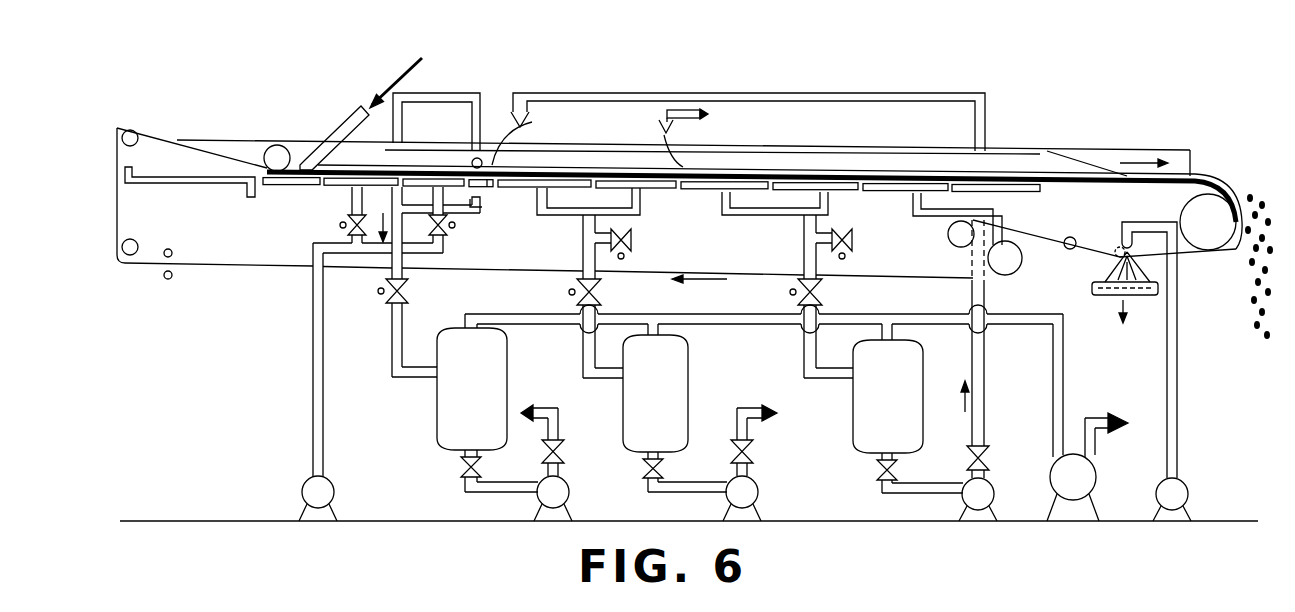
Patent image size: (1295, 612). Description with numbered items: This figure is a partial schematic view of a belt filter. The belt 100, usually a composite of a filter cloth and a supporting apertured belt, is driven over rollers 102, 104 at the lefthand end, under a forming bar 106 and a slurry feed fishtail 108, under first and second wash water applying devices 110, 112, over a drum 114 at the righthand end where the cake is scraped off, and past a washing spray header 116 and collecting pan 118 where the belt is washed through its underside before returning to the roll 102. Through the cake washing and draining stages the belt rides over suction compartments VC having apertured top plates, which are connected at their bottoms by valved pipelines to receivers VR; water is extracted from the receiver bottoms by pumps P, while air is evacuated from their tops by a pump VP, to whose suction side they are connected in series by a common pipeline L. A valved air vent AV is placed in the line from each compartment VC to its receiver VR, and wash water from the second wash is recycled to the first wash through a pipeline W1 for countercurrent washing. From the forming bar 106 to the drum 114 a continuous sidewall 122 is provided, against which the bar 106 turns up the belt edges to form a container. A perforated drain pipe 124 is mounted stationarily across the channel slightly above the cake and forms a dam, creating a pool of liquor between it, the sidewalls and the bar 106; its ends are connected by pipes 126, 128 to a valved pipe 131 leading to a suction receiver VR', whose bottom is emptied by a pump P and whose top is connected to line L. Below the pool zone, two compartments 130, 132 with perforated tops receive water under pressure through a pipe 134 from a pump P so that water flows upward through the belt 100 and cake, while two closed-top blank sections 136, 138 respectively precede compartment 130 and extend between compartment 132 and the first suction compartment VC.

The belt 100 is at (163, 133).
The roller 102 is at (135, 242).
The roller 104 is at (133, 130).
The forming bar 106 is at (276, 150).
The slurry feed fishtail 108 is at (346, 112).
The first wash water applying device 110 is at (533, 126).
The second wash water applying device 112 is at (682, 126).
The drum 114 is at (1228, 233).
The washing spray header 116 is at (1118, 236).
The collecting pan 118 is at (1092, 287).
The sidewall 122 is at (295, 143).
The perforated drain pipe 124 is at (472, 162).
The pipe 126 is at (452, 200).
The pipe 128 is at (423, 93).
The compartment 130 is at (335, 187).
The valved pipe 131 is at (390, 332).
The compartment 132 is at (450, 190).
The pipe 134 is at (313, 310).
The blank section 136 is at (282, 188).
The blank section 138 is at (489, 190).
The suction compartment VC is at (539, 205).
The valved air vent AV is at (640, 237).
The pipeline W1 is at (850, 93).
The common pipeline L is at (1065, 353).
The receiver VR is at (680, 390).
The pump VP is at (1087, 467).
The pump P is at (745, 498).